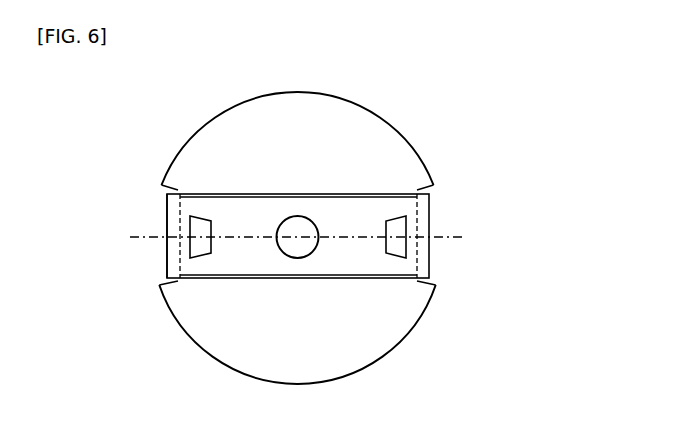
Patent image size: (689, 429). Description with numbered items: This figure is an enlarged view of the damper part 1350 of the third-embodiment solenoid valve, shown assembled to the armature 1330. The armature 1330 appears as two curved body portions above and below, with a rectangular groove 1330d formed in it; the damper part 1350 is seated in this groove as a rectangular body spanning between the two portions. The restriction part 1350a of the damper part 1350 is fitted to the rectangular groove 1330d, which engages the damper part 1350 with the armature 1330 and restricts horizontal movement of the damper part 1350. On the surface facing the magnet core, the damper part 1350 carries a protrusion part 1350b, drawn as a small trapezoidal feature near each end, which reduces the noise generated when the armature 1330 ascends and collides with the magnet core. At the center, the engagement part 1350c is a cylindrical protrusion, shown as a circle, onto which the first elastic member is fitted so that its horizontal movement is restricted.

The armature 1330 is at (408, 137).
The rectangular groove 1330d is at (434, 284).
The damper part 1350 is at (432, 213).
The restriction part 1350a is at (172, 256).
The protrusion part 1350b is at (190, 222).
The engagement part 1350c is at (291, 218).